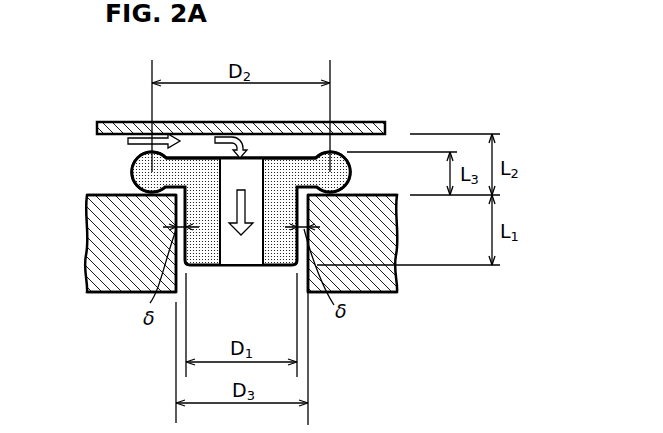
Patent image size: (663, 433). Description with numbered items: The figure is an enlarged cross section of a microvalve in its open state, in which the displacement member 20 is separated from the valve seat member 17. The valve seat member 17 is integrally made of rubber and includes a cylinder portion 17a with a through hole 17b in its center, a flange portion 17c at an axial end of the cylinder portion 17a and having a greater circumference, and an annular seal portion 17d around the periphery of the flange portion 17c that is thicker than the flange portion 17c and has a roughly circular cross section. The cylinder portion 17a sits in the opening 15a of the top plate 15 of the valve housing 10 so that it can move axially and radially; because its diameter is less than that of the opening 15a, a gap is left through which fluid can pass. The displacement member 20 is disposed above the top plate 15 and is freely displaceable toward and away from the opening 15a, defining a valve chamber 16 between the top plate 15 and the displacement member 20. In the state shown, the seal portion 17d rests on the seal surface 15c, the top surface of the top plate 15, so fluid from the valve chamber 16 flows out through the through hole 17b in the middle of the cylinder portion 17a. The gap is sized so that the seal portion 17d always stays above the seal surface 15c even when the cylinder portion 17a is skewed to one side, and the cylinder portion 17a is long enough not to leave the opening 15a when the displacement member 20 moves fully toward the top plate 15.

The valve housing 10 is at (402, 285).
The top plate 15 is at (390, 237).
The opening 15a is at (303, 290).
The seal surface 15c is at (106, 193).
The valve chamber 16 is at (70, 160).
The valve seat member 17 is at (237, 266).
The cylinder portion 17a is at (209, 265).
The through hole 17b is at (269, 263).
The flange portion 17c is at (305, 157).
The seal portion 17d is at (134, 166).
The displacement member 20 is at (124, 121).